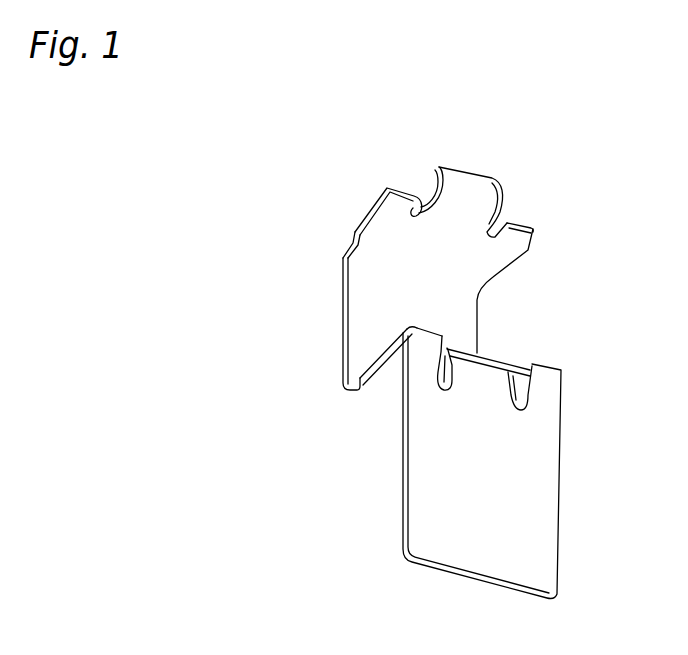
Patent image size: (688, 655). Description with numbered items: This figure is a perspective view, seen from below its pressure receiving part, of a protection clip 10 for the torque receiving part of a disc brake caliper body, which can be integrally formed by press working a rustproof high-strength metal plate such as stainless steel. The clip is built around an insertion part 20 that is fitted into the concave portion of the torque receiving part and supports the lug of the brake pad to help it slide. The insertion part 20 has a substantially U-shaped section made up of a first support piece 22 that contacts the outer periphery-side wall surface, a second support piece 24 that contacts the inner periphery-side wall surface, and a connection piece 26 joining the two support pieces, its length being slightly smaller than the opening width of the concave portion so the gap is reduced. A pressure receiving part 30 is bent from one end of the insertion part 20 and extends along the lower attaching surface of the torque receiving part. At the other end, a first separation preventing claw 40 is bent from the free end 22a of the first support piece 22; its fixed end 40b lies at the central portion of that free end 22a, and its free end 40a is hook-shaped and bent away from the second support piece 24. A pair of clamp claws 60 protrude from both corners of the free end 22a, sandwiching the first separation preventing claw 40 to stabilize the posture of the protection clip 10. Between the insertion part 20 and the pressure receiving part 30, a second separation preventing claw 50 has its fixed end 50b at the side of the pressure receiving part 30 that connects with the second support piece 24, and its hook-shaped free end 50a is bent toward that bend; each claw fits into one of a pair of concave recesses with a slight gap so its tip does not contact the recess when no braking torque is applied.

The protection clip 10 is at (463, 78).
The insertion part 20 is at (203, 261).
The first support piece 22 is at (487, 253).
The free end of the first support piece 22a is at (420, 243).
The second support piece 24 is at (388, 377).
The connection piece 26 is at (376, 308).
The pressure receiving part 30 is at (497, 531).
The first separation preventing claw 40 is at (472, 202).
The free end of the first separation preventing claw 40a is at (462, 175).
The fixed end of the first separation preventing claw 40b is at (455, 214).
The second separation preventing claw 50 is at (484, 378).
The free end of the second separation preventing claw 50a is at (477, 352).
The fixed end of the second separation preventing claw 50b is at (465, 397).
The clamp claw 60 is at (387, 187).